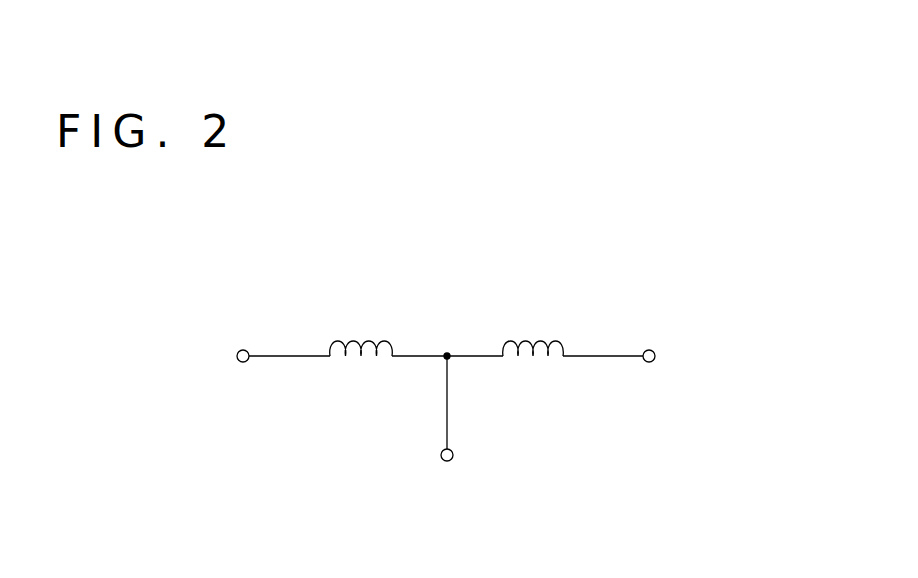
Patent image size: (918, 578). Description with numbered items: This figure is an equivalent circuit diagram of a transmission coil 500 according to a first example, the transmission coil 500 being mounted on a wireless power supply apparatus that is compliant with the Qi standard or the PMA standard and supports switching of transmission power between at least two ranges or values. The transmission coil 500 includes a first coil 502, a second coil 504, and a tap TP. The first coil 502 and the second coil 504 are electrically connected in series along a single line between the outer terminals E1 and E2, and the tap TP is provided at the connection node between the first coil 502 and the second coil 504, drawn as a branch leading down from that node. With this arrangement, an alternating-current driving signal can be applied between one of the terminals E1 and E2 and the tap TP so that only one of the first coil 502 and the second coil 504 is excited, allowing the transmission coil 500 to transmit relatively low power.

The transmission coil 500 is at (735, 264).
The first coil 502 is at (363, 330).
The second coil 504 is at (529, 330).
The terminal E1 is at (241, 362).
The terminal E2 is at (646, 362).
The tap TP is at (452, 460).